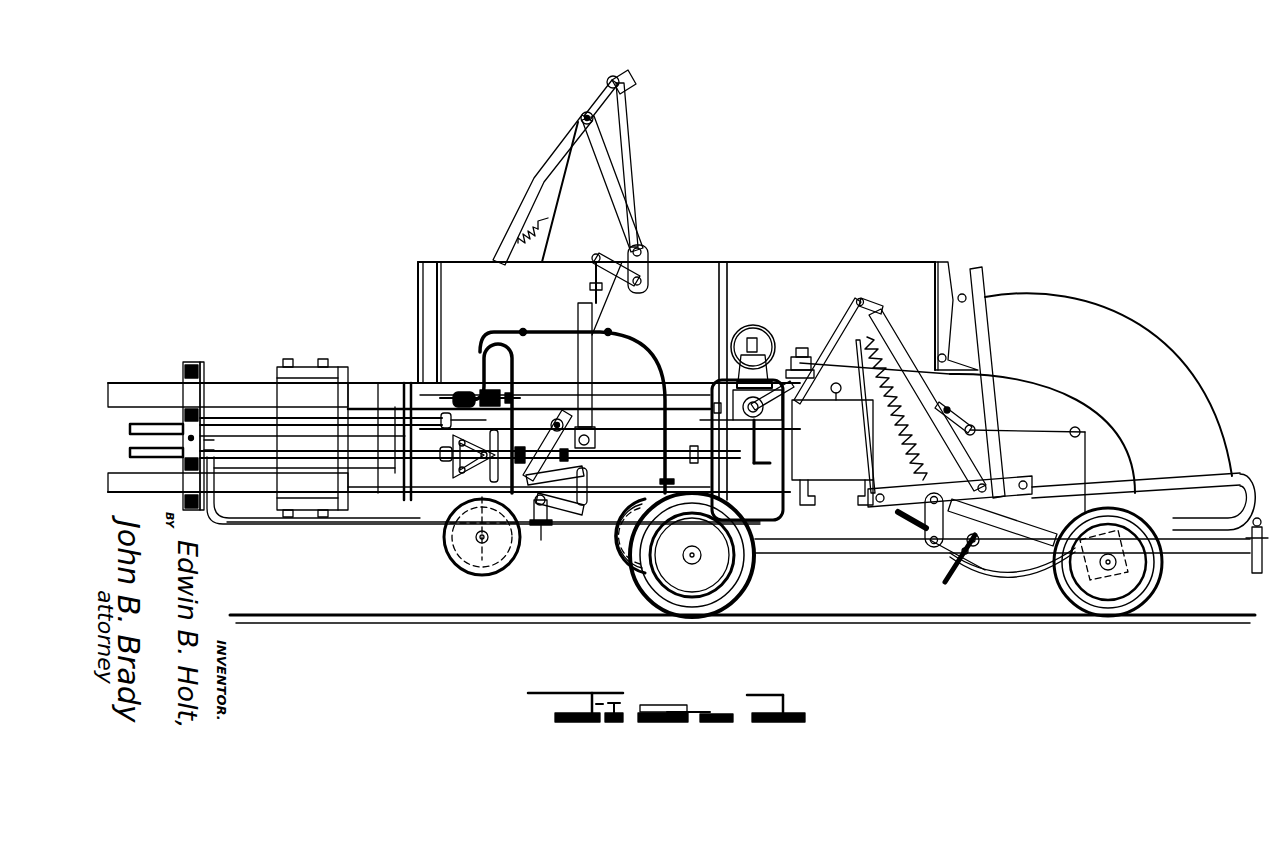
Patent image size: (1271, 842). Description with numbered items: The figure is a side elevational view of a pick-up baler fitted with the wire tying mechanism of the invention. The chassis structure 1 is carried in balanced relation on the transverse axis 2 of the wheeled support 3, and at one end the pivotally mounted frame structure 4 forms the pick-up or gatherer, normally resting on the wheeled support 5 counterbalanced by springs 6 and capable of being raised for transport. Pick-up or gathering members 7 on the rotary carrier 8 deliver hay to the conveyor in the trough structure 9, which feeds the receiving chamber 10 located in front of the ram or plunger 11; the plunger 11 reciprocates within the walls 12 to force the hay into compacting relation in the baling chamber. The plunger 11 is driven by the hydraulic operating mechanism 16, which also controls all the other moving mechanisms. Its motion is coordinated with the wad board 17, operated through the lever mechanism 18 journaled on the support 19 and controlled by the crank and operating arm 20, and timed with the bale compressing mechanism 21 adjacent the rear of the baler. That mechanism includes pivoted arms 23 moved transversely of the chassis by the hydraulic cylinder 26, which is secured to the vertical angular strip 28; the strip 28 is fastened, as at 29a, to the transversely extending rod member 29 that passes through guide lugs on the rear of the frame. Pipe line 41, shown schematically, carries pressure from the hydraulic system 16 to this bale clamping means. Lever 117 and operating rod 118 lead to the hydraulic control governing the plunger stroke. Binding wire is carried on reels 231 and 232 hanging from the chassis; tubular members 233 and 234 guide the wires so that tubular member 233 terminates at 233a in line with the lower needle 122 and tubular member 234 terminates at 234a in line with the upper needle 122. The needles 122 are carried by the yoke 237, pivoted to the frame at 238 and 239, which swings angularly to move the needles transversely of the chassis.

The chassis structure 1 is at (750, 487).
The transverse axis 2 is at (688, 563).
The wheeled support 3 is at (690, 607).
The pivotally mounted frame structure 4 is at (1083, 323).
The wheeled support 5 is at (1106, 606).
The springs 6 is at (888, 446).
The pick-up or gathering members 7 is at (940, 577).
The rotary carrier 8 is at (1035, 437).
The trough structure 9 is at (903, 280).
The receiving chamber 10 is at (404, 388).
The ram or plunger 11 is at (574, 413).
The walls 12 is at (385, 393).
The hydraulic operating mechanism 16 is at (797, 348).
The wad board 17 is at (508, 243).
The lever mechanism 18 is at (606, 186).
The support 19 is at (640, 300).
The crank and operating arm 20 is at (590, 272).
The bale compressing mechanism 21 is at (250, 400).
The arms 23 is at (145, 425).
The hydraulic cylinder 26 is at (210, 445).
The vertically disposed angular member or strip 28 is at (190, 362).
The transversely extending rod member 29 is at (202, 362).
The securing point of rod member 29a is at (206, 380).
The pipe line 41 is at (250, 522).
The lever 117 is at (541, 530).
The operating rod 118 is at (548, 524).
The needles 122 is at (407, 395).
The wire reel 231 is at (462, 562).
The wire reel 232 is at (625, 560).
The tubular member 233 is at (513, 453).
The terminal position of tubular member 233a is at (455, 478).
The tubular member 234 is at (668, 393).
The terminal position of tubular member 234a is at (482, 360).
The yoke 237 is at (346, 368).
The yoke pivot 238 is at (288, 359).
The yoke pivot 239 is at (288, 520).